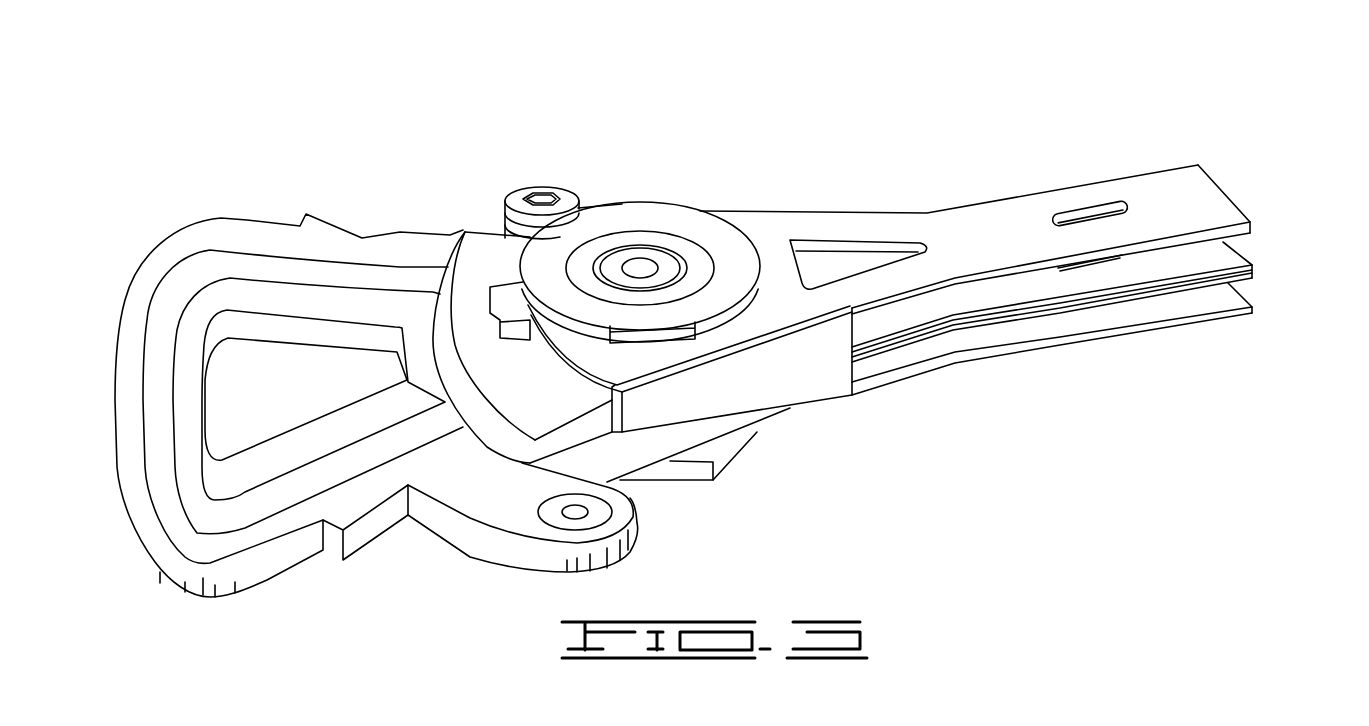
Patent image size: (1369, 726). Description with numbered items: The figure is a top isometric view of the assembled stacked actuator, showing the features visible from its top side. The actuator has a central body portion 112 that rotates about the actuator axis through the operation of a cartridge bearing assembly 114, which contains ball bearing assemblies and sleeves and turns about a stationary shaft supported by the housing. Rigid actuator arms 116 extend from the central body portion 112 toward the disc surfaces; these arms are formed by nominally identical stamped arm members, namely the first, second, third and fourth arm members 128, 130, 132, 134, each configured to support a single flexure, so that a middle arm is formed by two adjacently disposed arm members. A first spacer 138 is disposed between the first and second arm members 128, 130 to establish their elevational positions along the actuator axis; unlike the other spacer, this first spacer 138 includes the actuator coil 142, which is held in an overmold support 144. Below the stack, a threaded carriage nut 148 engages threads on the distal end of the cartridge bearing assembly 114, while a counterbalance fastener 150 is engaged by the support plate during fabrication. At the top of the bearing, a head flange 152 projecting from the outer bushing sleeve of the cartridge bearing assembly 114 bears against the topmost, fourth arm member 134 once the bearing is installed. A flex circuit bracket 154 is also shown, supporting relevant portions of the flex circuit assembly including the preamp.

The central body portion 112 is at (756, 124).
The cartridge bearing assembly 114 is at (645, 240).
The actuator arm 116 is at (1190, 118).
The first arm member 128 is at (1207, 323).
The second arm member 130 is at (1252, 270).
The third arm member 132 is at (1252, 264).
The fourth arm member 134 is at (1210, 177).
The first spacer 138 is at (494, 255).
The actuator coil 142 is at (348, 275).
The overmold support 144 is at (218, 228).
The threaded carriage nut 148 is at (688, 468).
The counterbalance fastener 150 is at (540, 185).
The head flange 152 is at (732, 250).
The flex circuit bracket 154 is at (785, 397).